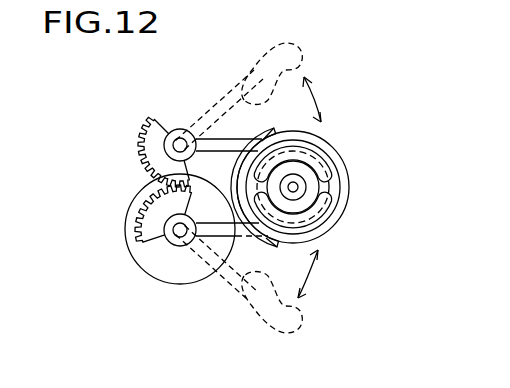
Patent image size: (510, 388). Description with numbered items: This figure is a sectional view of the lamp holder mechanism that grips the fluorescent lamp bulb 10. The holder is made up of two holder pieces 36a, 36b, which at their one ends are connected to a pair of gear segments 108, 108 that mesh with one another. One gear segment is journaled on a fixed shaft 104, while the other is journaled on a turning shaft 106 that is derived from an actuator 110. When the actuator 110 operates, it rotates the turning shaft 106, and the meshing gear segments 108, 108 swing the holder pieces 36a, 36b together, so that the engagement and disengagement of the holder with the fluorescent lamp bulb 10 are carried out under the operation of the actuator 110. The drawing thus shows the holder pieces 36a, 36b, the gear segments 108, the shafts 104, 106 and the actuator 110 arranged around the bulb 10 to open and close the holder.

The fluorescent lamp bulb 10 is at (337, 187).
The holder piece 36a is at (306, 157).
The holder piece 36b is at (322, 215).
The fixed shaft 104 is at (180, 145).
The turning shaft 106 is at (176, 240).
The gear segment 108 is at (140, 146).
The actuator 110 is at (182, 263).